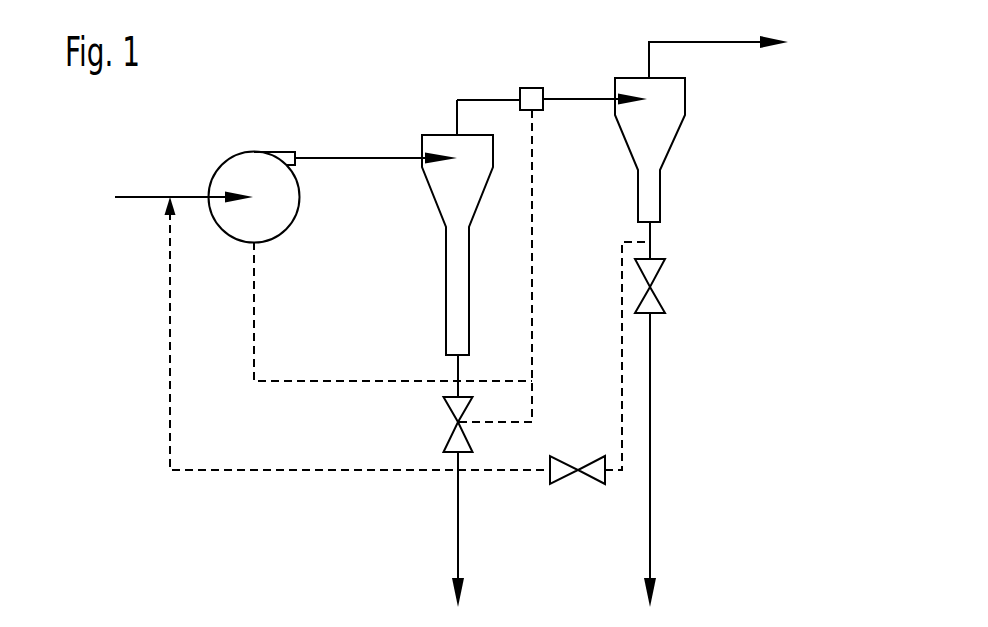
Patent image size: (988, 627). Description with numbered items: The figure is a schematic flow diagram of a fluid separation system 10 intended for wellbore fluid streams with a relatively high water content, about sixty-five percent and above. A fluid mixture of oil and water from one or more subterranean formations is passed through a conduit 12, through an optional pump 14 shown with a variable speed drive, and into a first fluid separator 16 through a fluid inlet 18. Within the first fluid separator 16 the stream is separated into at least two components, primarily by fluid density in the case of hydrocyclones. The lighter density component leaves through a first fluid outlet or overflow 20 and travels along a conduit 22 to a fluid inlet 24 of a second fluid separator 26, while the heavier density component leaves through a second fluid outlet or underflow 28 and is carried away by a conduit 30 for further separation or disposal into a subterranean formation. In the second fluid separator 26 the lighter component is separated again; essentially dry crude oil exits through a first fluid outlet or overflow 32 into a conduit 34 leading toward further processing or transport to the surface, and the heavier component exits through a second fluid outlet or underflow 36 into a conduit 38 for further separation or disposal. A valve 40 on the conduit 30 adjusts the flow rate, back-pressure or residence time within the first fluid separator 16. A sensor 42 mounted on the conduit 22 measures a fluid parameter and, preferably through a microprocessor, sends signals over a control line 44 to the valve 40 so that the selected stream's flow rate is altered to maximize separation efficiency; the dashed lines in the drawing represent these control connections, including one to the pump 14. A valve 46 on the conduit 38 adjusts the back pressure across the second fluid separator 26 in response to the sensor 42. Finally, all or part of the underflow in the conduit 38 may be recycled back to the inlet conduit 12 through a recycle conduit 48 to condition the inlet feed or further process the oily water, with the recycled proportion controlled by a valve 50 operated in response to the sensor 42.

The fluid separation system 10 is at (259, 87).
The conduit 12 is at (153, 196).
The pump 14 is at (225, 160).
The first fluid separator 16 is at (457, 245).
The fluid inlet 18 is at (443, 140).
The first fluid outlet or overflow 20 is at (455, 128).
The conduit 22 is at (480, 98).
The fluid inlet 24 is at (632, 97).
The second fluid separator 26 is at (650, 150).
The second fluid outlet or underflow 28 is at (457, 357).
The conduit 30 is at (457, 532).
The first fluid outlet or overflow 32 is at (650, 76).
The conduit 34 is at (713, 40).
The second fluid outlet or underflow 36 is at (650, 227).
The conduit 38 is at (652, 392).
The valve 40 is at (457, 422).
The sensor 42 is at (532, 88).
The control line 44 is at (532, 257).
The valve 46 is at (652, 287).
The recycle conduit 48 is at (250, 470).
The valve 50 is at (580, 472).